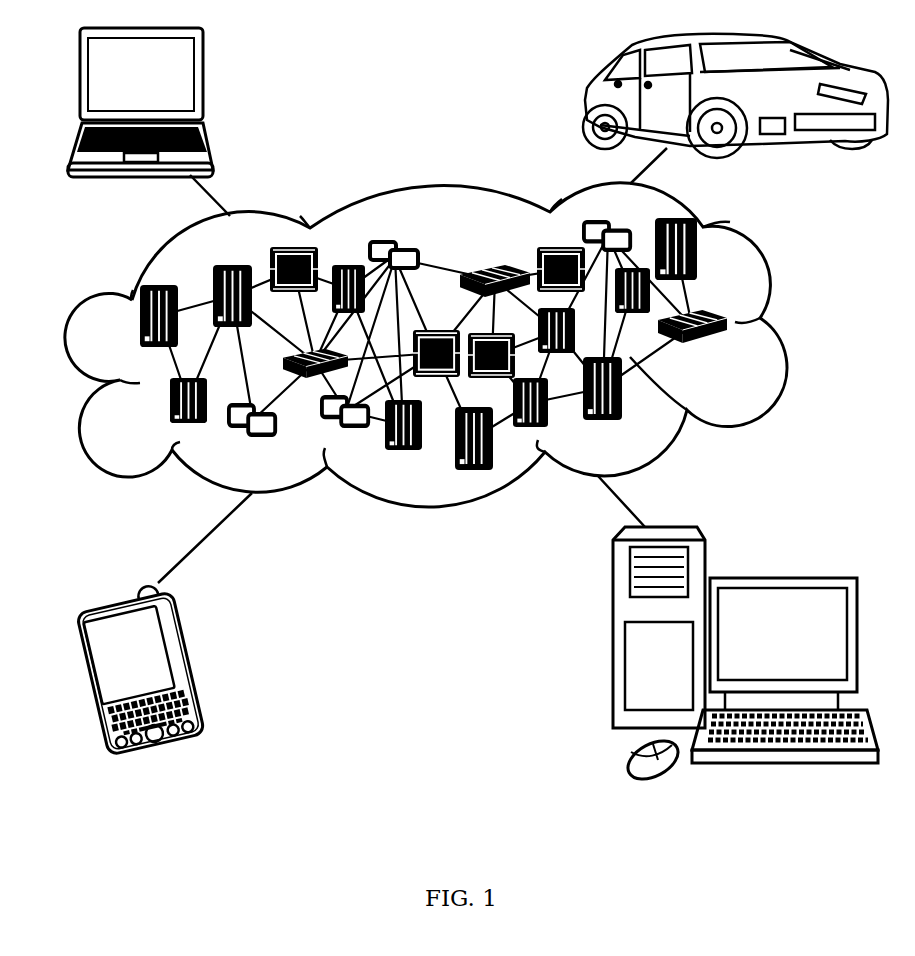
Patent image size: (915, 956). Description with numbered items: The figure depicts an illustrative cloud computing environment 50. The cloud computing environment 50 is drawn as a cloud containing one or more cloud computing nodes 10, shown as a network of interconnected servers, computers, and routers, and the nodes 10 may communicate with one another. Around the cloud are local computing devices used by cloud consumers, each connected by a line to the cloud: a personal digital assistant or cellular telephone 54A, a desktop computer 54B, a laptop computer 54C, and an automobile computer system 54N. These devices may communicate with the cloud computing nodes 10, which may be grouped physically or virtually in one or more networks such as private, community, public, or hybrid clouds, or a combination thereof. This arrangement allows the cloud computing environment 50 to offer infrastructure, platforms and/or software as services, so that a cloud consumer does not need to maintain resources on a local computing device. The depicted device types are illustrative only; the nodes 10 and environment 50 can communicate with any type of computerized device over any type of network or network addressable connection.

The cloud computing node 10 is at (740, 353).
The cloud computing environment 50 is at (779, 322).
The personal digital assistant or cellular telephone 54A is at (192, 662).
The desktop computer 54B is at (782, 578).
The laptop computer 54C is at (203, 86).
The automobile computer system 54N is at (585, 98).